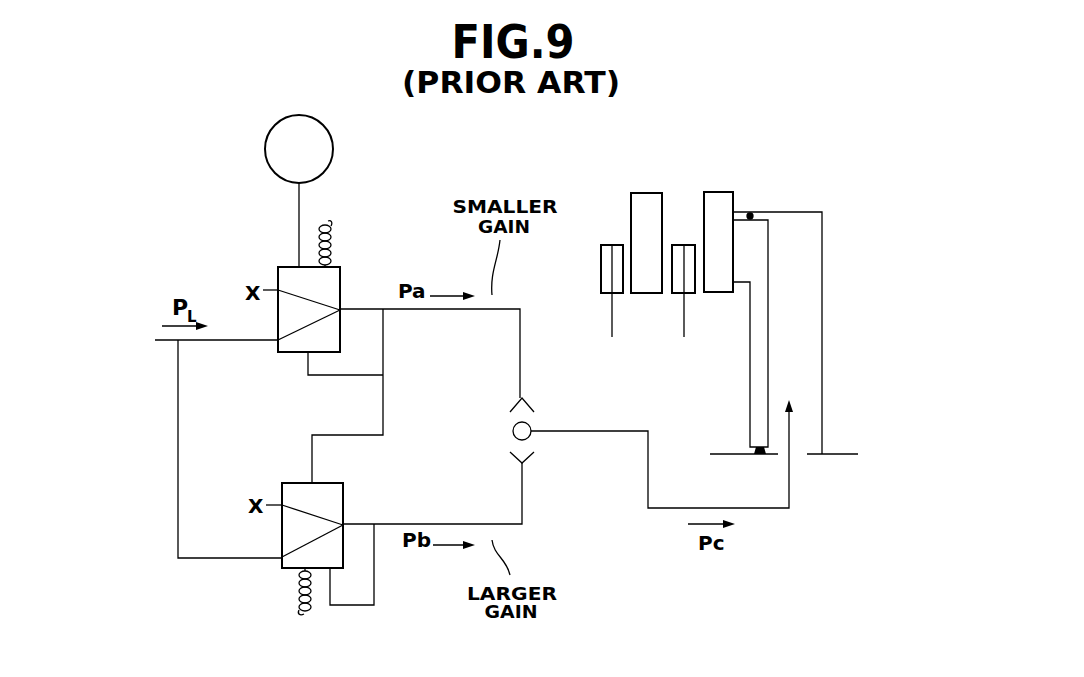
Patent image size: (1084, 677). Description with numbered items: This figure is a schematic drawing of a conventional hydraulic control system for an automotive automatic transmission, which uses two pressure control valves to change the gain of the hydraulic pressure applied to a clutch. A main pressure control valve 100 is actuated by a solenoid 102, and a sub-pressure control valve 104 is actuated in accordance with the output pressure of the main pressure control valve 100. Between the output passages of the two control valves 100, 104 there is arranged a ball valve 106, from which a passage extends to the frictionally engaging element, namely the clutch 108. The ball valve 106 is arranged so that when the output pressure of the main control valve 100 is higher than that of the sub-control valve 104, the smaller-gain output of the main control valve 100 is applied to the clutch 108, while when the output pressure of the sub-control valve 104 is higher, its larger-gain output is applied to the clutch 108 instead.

The main pressure control valve 100 is at (340, 285).
The solenoid 102 is at (333, 148).
The sub-pressure control valve 104 is at (343, 497).
The ball valve 106 is at (530, 425).
The clutch 108 is at (754, 189).